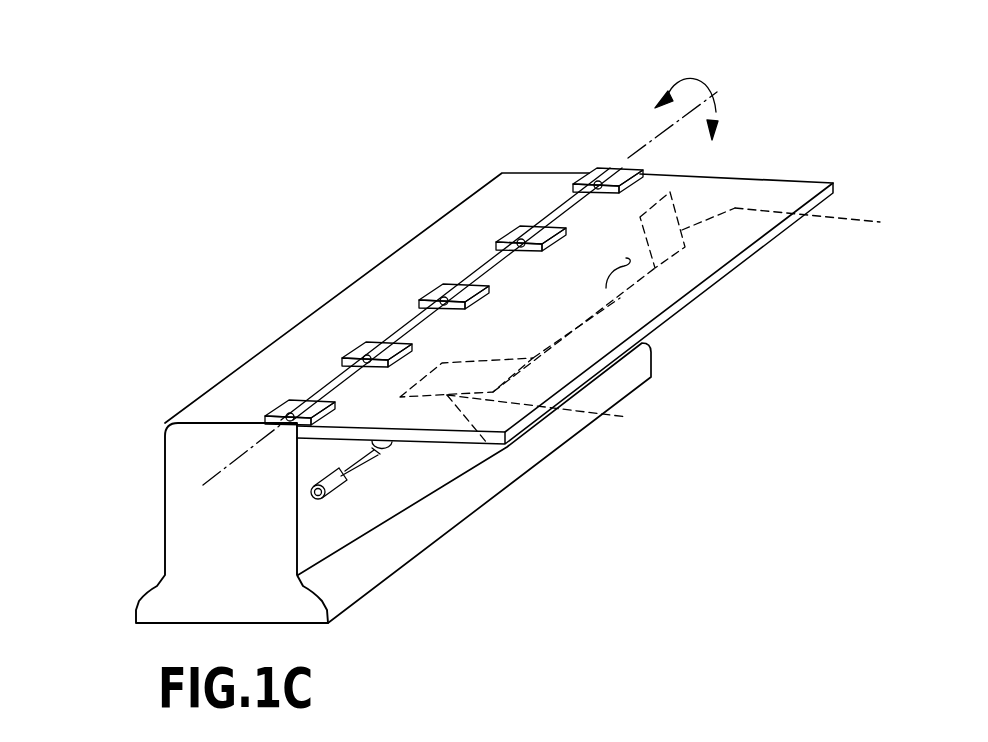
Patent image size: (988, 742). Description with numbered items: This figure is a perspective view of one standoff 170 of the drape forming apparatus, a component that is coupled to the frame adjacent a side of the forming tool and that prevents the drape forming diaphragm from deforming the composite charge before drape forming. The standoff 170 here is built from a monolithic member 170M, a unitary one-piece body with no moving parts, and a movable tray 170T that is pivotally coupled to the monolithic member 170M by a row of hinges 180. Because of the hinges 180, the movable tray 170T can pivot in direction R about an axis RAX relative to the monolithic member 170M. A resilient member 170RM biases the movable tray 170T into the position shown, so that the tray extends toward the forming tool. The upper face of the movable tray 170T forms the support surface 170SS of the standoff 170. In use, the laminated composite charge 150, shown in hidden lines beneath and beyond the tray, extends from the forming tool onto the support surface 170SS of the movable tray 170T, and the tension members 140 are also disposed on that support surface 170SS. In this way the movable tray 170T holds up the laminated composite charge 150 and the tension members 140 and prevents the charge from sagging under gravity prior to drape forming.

The standoff 170 is at (243, 242).
The monolithic member 170M is at (190, 480).
The movable tray 170T is at (750, 198).
The support surface 170SS is at (628, 284).
The resilient member 170RM is at (347, 493).
The hinges 180 is at (538, 228).
The tension members 140 is at (685, 247).
The laminated composite charge 150 is at (847, 218).
The axis RAX is at (643, 147).
The direction R is at (688, 80).